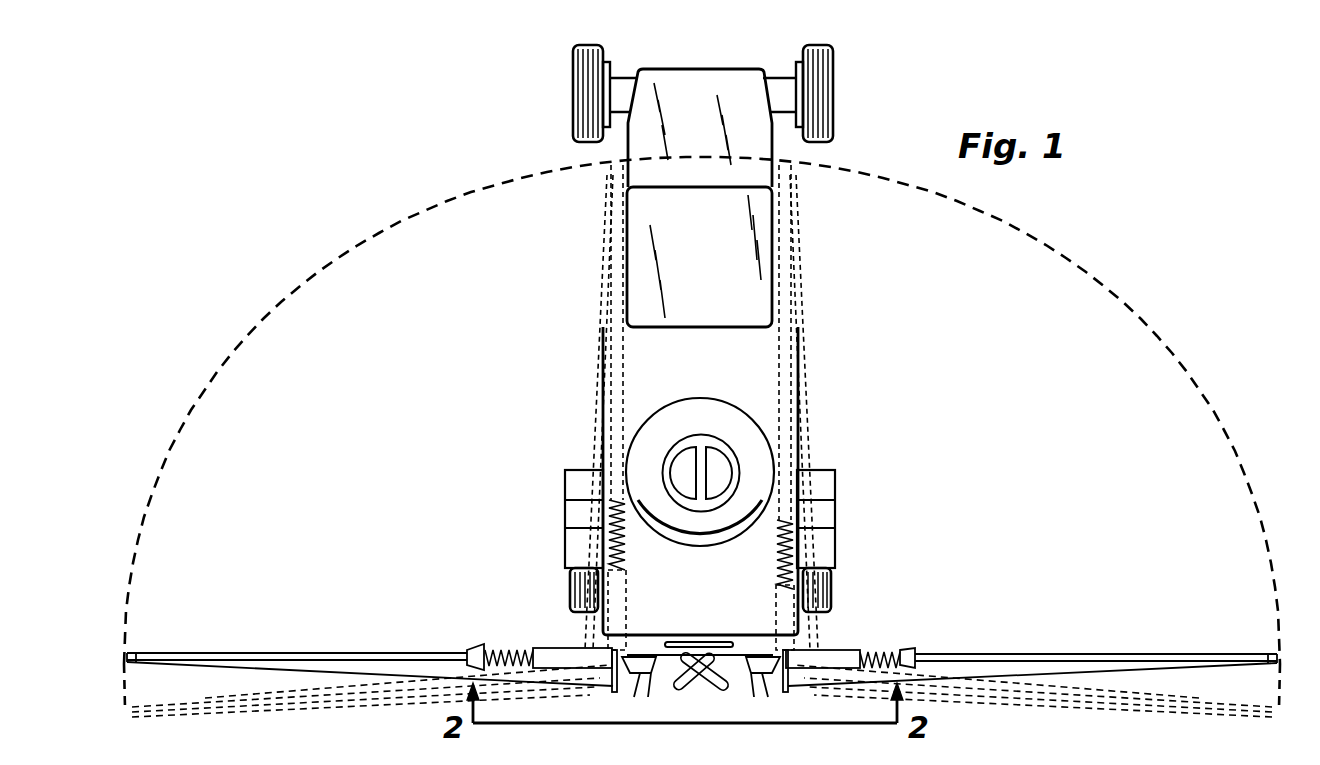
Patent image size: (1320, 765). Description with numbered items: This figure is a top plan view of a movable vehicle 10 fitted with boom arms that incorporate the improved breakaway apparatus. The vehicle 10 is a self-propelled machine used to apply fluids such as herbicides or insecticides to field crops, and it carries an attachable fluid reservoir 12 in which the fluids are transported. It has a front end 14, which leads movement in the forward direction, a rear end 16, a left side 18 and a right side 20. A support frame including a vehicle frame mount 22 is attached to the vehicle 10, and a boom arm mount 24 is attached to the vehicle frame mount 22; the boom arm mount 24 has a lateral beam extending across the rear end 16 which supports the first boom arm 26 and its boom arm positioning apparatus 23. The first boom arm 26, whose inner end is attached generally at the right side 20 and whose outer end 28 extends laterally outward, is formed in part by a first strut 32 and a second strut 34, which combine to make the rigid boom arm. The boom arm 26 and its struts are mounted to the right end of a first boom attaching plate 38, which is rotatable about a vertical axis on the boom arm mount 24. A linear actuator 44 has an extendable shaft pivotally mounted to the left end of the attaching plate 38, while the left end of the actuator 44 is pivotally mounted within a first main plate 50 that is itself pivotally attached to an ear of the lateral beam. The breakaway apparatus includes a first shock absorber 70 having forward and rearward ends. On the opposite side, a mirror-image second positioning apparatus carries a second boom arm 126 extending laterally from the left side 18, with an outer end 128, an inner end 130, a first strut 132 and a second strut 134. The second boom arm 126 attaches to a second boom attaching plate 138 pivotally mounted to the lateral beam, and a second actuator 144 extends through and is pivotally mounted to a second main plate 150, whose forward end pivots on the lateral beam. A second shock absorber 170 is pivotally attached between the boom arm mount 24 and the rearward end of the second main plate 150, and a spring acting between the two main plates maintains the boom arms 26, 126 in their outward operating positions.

The movable vehicle 10 is at (562, 362).
The fluid reservoir 12 is at (735, 432).
The front end 14 is at (702, 75).
The rear end 16 is at (637, 613).
The left side 18 is at (633, 228).
The right side 20 is at (745, 222).
The vehicle frame mount 22 is at (700, 636).
The boom arm positioning apparatus 23 is at (906, 652).
The boom arm mount 24 is at (755, 650).
The first boom arm 26 is at (1032, 663).
The outer end 28 is at (1250, 657).
The first strut 32 is at (1186, 658).
The second strut 34 is at (1160, 666).
The first boom attaching plate 38 is at (786, 690).
The linear actuator 44 is at (772, 690).
The first main plate 50 is at (738, 690).
The first shock absorber 70 is at (712, 690).
The second boom arm 126 is at (370, 654).
The outer end 128 is at (135, 655).
The inner end 130 is at (540, 648).
The first strut 132 is at (240, 655).
The second strut 134 is at (222, 665).
The second boom attaching plate 138 is at (612, 680).
The second actuator 144 is at (650, 690).
The second main plate 150 is at (657, 686).
The second shock absorber 170 is at (693, 688).